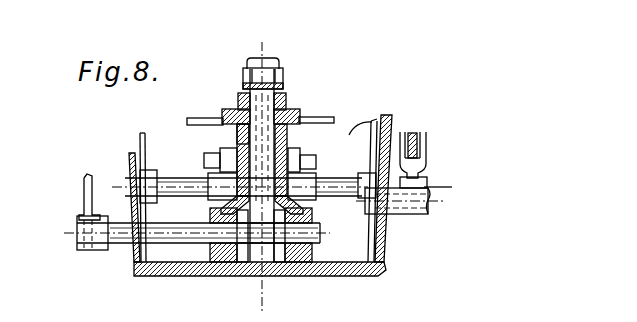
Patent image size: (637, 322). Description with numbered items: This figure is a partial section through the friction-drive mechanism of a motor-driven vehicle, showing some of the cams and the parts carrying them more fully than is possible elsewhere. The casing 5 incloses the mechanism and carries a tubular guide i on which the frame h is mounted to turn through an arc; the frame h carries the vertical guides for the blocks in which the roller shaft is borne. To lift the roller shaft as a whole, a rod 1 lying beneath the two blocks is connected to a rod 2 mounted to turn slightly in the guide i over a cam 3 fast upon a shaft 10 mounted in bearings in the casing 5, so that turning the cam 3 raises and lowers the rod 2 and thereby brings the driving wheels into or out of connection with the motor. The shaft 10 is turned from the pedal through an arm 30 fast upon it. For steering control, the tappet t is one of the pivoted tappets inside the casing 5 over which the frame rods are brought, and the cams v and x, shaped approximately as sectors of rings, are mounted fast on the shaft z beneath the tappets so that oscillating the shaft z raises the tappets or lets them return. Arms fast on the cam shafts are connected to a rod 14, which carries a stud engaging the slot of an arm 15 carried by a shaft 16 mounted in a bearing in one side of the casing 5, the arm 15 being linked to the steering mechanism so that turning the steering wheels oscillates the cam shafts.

The rod 1 is at (284, 82).
The rod 2 is at (268, 97).
The cam 3 is at (268, 258).
The casing 5 is at (168, 140).
The shaft 10 is at (128, 242).
The rod 14 is at (419, 146).
The arm 15 is at (424, 163).
The shaft 16 is at (432, 212).
The arm 30 is at (78, 212).
The frame h is at (297, 125).
The tubular guide i is at (236, 137).
The cam x is at (222, 183).
The shaft z is at (176, 178).
The tappet t is at (182, 172).
The cam v is at (318, 172).